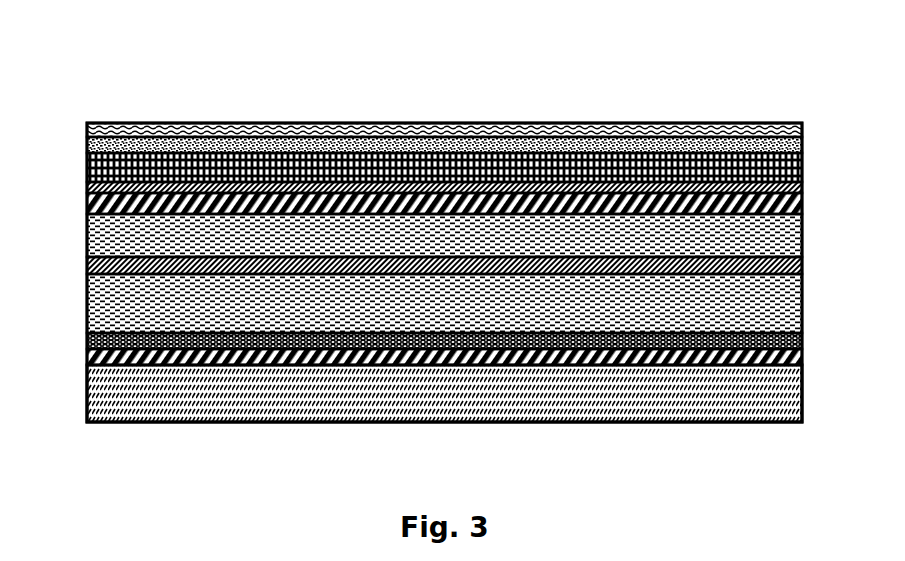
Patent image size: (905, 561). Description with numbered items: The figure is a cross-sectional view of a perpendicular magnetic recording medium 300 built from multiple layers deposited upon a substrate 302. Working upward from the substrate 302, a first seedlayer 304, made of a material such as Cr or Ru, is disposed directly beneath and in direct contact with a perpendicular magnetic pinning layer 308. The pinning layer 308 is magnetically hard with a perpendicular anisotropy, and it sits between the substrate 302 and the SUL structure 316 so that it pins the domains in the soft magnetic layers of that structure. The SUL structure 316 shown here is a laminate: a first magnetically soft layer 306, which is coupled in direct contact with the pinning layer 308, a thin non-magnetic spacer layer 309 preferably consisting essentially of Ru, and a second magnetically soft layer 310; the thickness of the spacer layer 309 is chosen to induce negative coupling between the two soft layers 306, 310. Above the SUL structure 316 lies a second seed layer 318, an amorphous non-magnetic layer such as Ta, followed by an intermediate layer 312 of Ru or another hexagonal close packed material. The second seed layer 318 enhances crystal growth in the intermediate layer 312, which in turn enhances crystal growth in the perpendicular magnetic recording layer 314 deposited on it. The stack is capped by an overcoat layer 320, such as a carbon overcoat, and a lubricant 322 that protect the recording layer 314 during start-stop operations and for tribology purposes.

The magnetic recording medium 300 is at (350, 100).
The substrate 302 is at (730, 425).
The first seedlayer 304 is at (802, 357).
The first magnetically soft layer 306 is at (802, 317).
The perpendicular magnetic pinning layer 308 is at (802, 340).
The non-magnetic spacer layer 309 is at (802, 265).
The second magnetically soft layer 310 is at (802, 243).
The intermediate layer 312 is at (802, 185).
The perpendicular magnetic recording layer 314 is at (802, 167).
The SUL structure 316 is at (446, 263).
The second seed layer 318 is at (802, 203).
The overcoat layer 320 is at (802, 142).
The lubricant 322 is at (715, 120).